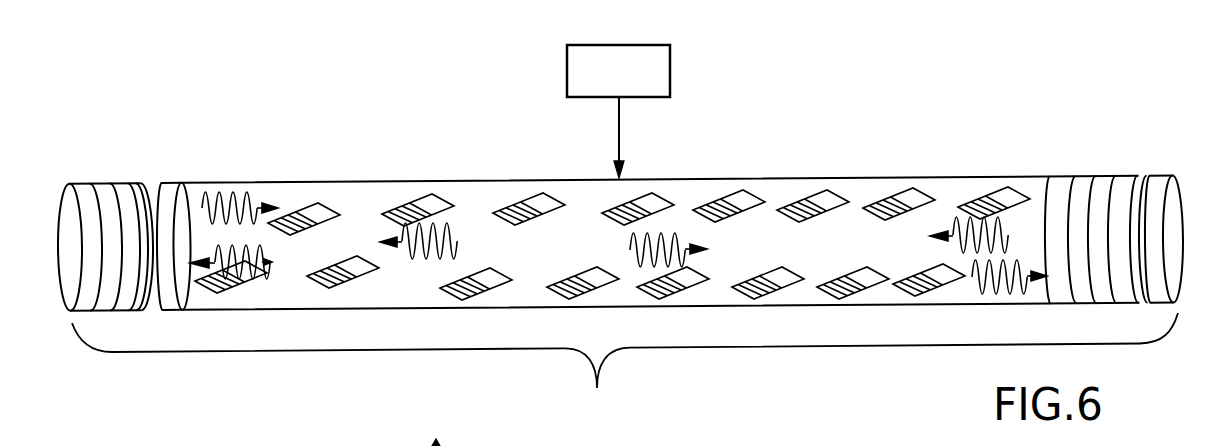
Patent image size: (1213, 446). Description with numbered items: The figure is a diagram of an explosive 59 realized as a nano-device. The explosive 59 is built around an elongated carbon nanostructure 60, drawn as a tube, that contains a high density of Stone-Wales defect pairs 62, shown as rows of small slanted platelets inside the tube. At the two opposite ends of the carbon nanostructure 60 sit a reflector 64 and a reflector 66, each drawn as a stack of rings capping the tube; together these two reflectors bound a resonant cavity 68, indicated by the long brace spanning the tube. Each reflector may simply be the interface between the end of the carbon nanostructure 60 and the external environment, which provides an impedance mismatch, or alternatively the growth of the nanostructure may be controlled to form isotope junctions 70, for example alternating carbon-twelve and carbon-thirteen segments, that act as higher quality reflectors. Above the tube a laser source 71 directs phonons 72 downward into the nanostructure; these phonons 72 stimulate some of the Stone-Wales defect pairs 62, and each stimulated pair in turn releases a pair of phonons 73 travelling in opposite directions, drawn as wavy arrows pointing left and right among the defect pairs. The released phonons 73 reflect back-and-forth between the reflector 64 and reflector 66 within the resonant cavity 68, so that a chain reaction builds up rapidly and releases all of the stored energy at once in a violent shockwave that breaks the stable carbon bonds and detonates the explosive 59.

The explosive 59 is at (900, 95).
The carbon nanostructure 60 is at (930, 177).
The Stone-Wales defect pairs 62 is at (432, 198).
The reflector 64 is at (118, 182).
The reflector 66 is at (1107, 185).
The resonant cavity 68 is at (625, 367).
The isotope junctions 70 is at (438, 429).
The laser source 71 is at (670, 63).
The phonons 72 is at (688, 137).
The phonons 73 is at (237, 182).